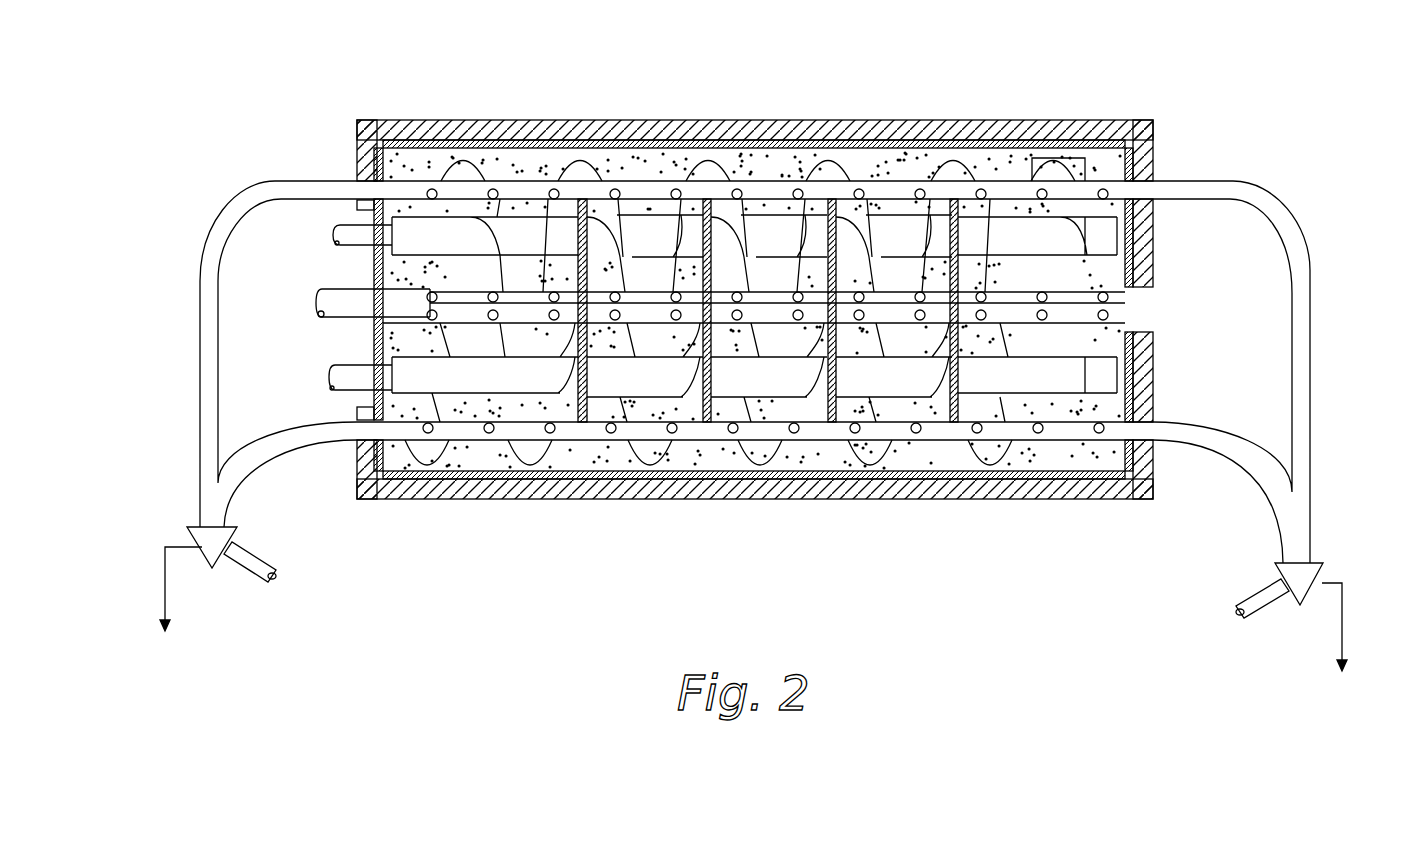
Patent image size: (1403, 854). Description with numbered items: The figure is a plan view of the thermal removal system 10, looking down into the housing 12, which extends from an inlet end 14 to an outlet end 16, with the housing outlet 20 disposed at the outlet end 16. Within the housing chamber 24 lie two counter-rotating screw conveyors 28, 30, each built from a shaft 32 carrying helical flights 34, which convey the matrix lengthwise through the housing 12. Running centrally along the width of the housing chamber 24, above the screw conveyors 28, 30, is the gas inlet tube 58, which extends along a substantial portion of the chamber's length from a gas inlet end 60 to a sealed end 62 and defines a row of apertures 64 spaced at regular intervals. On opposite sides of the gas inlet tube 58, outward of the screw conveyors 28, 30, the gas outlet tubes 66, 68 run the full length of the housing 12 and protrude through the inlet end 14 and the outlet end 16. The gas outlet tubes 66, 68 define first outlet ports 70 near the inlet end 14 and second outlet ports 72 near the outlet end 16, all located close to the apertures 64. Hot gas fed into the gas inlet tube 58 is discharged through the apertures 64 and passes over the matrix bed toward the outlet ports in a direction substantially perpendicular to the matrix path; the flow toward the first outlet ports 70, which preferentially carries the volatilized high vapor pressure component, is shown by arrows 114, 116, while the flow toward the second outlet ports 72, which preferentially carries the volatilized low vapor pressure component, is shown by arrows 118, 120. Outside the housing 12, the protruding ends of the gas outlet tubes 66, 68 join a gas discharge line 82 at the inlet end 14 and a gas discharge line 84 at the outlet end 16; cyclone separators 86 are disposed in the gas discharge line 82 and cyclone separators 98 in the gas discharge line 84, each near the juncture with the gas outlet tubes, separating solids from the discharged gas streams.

The thermal removal system 10 is at (410, 78).
The housing 12 is at (993, 130).
The inlet end 14 is at (508, 158).
The outlet end 16 is at (988, 464).
The housing outlet 20 is at (1072, 160).
The housing chamber 24 is at (915, 205).
The screw conveyor 28 is at (729, 415).
The screw conveyor 30 is at (657, 210).
The shaft 32 is at (622, 397).
The flights 34 is at (708, 168).
The gas inlet tube 58 is at (441, 330).
The gas inlet end 60 is at (340, 307).
The sealed end 62 is at (1140, 305).
The apertures 64 is at (425, 297).
The gas outlet tube 66 is at (597, 437).
The gas outlet tube 68 is at (858, 170).
The first outlet ports 70 is at (553, 188).
The second outlet ports 72 is at (967, 200).
The gas discharge line 82 is at (212, 508).
The gas discharge line 84 is at (1312, 540).
The cyclone separators 86 is at (212, 550).
The cyclone separators 98 is at (1298, 588).
The arrows 114 is at (503, 232).
The arrows 116 is at (555, 370).
The arrows 118 is at (977, 250).
The arrows 120 is at (925, 368).